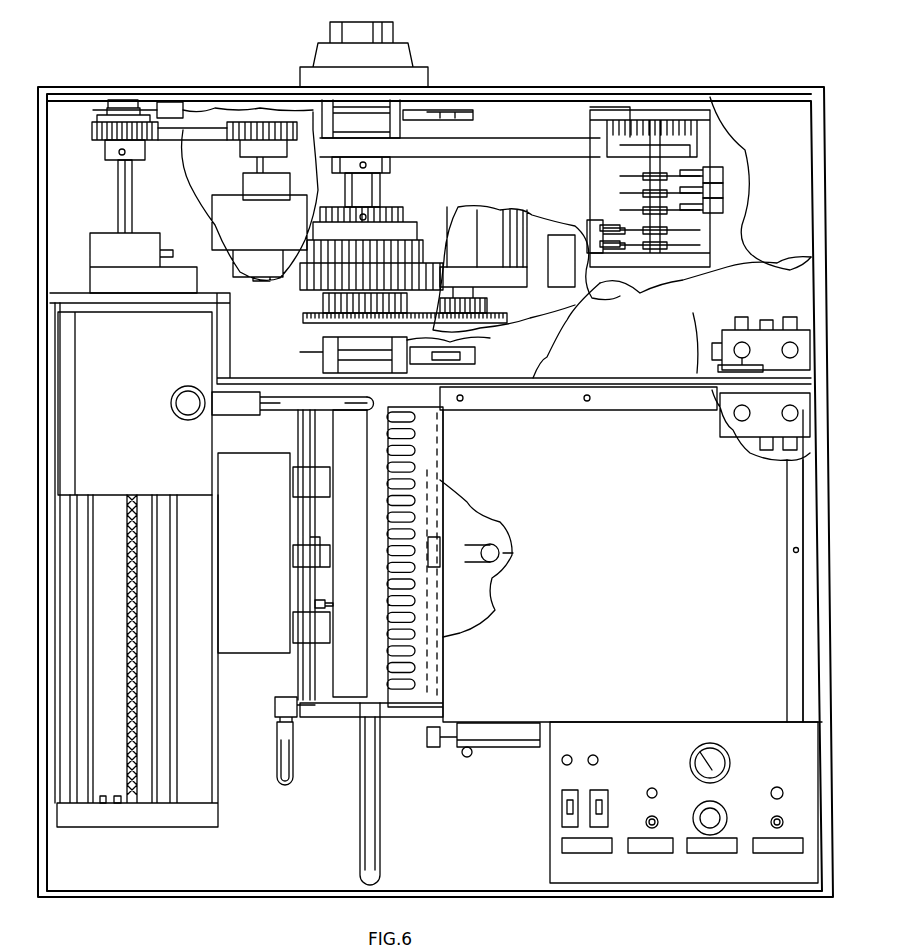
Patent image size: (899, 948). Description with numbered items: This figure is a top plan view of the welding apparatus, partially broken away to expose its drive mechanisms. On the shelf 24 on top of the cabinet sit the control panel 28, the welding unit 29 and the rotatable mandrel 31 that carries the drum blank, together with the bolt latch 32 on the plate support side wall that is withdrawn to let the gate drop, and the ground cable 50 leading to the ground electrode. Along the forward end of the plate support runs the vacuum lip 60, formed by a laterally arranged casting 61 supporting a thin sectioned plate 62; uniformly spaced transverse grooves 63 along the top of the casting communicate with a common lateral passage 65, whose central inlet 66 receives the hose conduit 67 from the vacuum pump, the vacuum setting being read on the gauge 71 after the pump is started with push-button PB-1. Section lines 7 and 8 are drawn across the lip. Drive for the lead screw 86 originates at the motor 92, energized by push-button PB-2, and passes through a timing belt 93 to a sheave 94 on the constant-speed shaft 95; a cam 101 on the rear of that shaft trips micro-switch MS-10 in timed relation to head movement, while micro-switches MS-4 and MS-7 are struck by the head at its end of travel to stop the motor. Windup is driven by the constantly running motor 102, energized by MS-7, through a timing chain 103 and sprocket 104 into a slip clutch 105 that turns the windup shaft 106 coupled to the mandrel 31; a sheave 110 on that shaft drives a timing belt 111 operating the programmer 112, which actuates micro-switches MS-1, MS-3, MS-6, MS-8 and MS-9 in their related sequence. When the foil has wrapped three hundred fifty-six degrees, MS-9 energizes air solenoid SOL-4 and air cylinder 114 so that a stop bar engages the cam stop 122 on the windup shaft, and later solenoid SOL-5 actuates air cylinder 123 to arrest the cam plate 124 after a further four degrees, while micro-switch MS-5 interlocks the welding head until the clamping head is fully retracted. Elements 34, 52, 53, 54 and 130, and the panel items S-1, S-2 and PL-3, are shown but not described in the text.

The shelf 24 is at (320, 885).
The control panel 28 is at (733, 898).
The welding unit 29 is at (225, 434).
The rotatable mandrel 31 is at (368, 812).
The bolt latch 32 is at (520, 740).
The slide block 34 is at (185, 480).
The ground cable 50 is at (283, 752).
The cover panel 52 is at (648, 700).
The guide bar 53 is at (792, 533).
The cross bar 54 is at (622, 397).
The vacuum lip 60 is at (154, 944).
The casting 61 is at (388, 473).
The thin sectioned plate 62 is at (730, 943).
The grooves 63 is at (410, 690).
The common laterally arranged passage 65 is at (435, 648).
The inlet 66 is at (438, 560).
The hose conduit 67 is at (468, 553).
The section line 7- 7 is at (522, 552).
The section line 8- 8 is at (470, 673).
The gauge 71 is at (728, 755).
The lead screw 86 is at (125, 520).
The motor 92 is at (225, 232).
The timing belt 93 is at (172, 135).
The sheave 94 is at (105, 148).
The rotatable shaft 95 is at (118, 196).
The cam 101 is at (92, 118).
The motor 102 is at (500, 262).
The timing chain 103 is at (497, 305).
The sprocket 104 is at (300, 318).
The slip clutch 105 is at (278, 290).
The windup shaft 106 is at (380, 190).
The sheave 110 is at (400, 160).
The timing belt 111 is at (518, 148).
The programmer 112 is at (660, 87).
The air cylinder 114 is at (356, 115).
The cam stop 122 is at (420, 120).
The air cylinder 123 is at (330, 358).
The cam plate 124 is at (445, 348).
The rod 130 is at (239, 444).
The micro-switch MS-1 is at (597, 220).
The micro-switch MS-3 is at (723, 190).
The micro-switch MS-4 is at (102, 805).
The micro-switch MS-5 is at (318, 605).
The micro-switch MS-6 is at (723, 207).
The micro-switch MS-7 is at (117, 805).
The micro-switch MS-8 is at (723, 172).
The micro-switch MS-9 is at (705, 278).
The micro-switch MS-10 is at (175, 100).
The air solenoid SOL-4 is at (805, 340).
The solenoid SOL-5 is at (805, 405).
The switch S-1 is at (560, 797).
The switch S-2 is at (608, 797).
The push-button PB-1 is at (652, 828).
The push-button PB-2 is at (777, 828).
The pilot light PL-3 is at (790, 784).